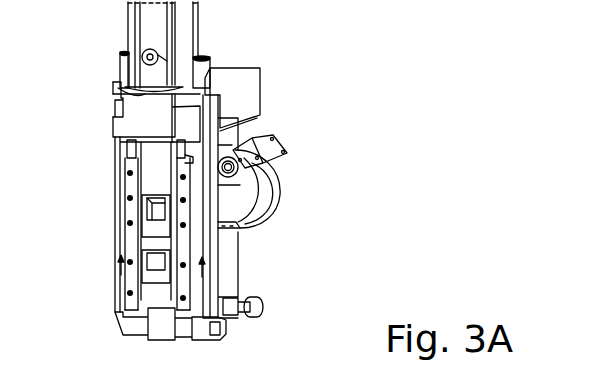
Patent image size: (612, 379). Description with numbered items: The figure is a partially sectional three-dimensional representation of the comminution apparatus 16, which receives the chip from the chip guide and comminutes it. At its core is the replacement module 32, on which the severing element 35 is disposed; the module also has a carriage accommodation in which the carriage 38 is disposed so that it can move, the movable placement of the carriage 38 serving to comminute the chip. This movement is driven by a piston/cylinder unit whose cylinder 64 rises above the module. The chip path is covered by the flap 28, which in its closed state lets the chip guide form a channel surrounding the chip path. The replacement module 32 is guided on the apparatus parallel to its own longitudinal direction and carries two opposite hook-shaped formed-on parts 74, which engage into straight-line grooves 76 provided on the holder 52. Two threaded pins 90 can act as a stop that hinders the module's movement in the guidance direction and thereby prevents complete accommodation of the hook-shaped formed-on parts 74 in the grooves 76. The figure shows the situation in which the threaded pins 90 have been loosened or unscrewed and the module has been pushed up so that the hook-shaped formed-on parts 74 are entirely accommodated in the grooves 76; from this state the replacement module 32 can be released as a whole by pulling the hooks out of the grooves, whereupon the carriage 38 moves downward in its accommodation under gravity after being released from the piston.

The comminution apparatus 16 is at (104, 292).
The flap 28 is at (230, 257).
The replacement module 32 is at (218, 317).
The severing element 35 is at (145, 275).
The carriage 38 is at (153, 153).
The holder 52 is at (245, 92).
The cylinder 64 is at (190, 13).
The hook-shaped formed-on parts 74 is at (115, 100).
The straight-line grooves 76 is at (117, 93).
The threaded pins 90 is at (118, 60).